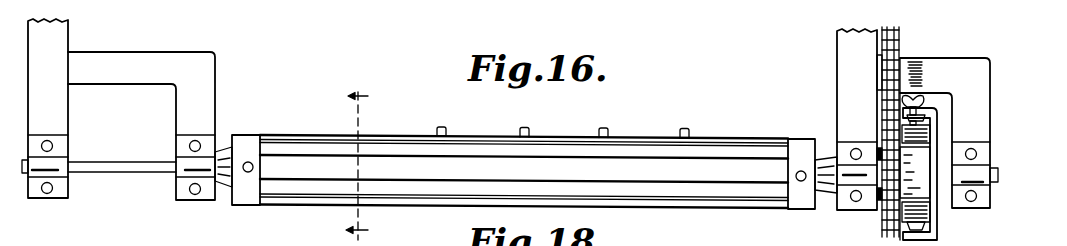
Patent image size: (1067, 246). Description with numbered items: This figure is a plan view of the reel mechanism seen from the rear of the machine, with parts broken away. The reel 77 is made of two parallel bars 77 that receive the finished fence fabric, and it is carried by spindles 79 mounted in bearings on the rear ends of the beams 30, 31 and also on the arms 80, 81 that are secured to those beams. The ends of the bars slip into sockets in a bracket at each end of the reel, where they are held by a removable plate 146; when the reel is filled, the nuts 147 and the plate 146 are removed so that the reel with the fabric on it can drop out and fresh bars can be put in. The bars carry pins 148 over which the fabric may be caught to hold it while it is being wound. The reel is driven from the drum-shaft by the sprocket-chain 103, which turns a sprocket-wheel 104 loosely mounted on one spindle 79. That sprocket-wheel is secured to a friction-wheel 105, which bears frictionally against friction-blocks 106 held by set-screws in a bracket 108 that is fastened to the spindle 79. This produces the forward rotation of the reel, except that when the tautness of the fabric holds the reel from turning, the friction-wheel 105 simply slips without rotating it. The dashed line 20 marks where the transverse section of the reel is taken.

The section line 20 is at (358, 155).
The beam 30 is at (48, 108).
The beam 31 is at (859, 119).
The reel 77 is at (570, 153).
The spindle 79 is at (115, 161).
The arm 80 is at (141, 126).
The arm 81 is at (945, 149).
The sprocket-chain 103 is at (899, 43).
The sprocket-wheel 104 is at (892, 211).
The friction-wheel 105 is at (924, 188).
The friction-block 106 is at (928, 131).
The bracket 108 is at (932, 230).
The removable plate 146 is at (244, 141).
The nut 147 is at (254, 167).
The pin 148 is at (528, 131).